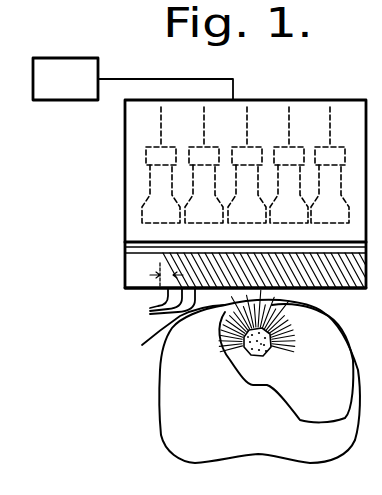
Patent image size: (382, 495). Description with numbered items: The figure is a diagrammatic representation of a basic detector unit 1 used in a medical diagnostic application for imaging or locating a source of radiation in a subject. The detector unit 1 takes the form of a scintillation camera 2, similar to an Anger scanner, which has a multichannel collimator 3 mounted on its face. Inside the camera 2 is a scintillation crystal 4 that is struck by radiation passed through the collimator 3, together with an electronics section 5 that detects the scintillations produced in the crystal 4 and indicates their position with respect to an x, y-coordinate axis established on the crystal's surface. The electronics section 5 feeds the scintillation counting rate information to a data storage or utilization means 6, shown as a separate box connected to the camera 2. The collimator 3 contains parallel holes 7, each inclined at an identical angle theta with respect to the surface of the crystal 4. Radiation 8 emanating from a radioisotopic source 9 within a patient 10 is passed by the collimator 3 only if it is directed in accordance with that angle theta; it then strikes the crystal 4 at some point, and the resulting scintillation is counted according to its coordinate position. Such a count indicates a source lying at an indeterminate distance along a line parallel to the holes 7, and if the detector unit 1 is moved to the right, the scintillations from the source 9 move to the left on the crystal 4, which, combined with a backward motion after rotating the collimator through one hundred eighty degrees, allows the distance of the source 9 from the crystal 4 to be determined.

The detector unit 1 is at (108, 158).
The scintillation camera 2 is at (124, 207).
The multichannel collimator 3 is at (124, 267).
The scintillation crystal 4 is at (124, 246).
The electronics section 5 is at (270, 115).
The data storage or utilization means 6 is at (52, 100).
The parallel holes 7 is at (150, 310).
The radiation 8 is at (174, 332).
The radioisotopic source 9 is at (272, 353).
The patient 10 is at (160, 408).